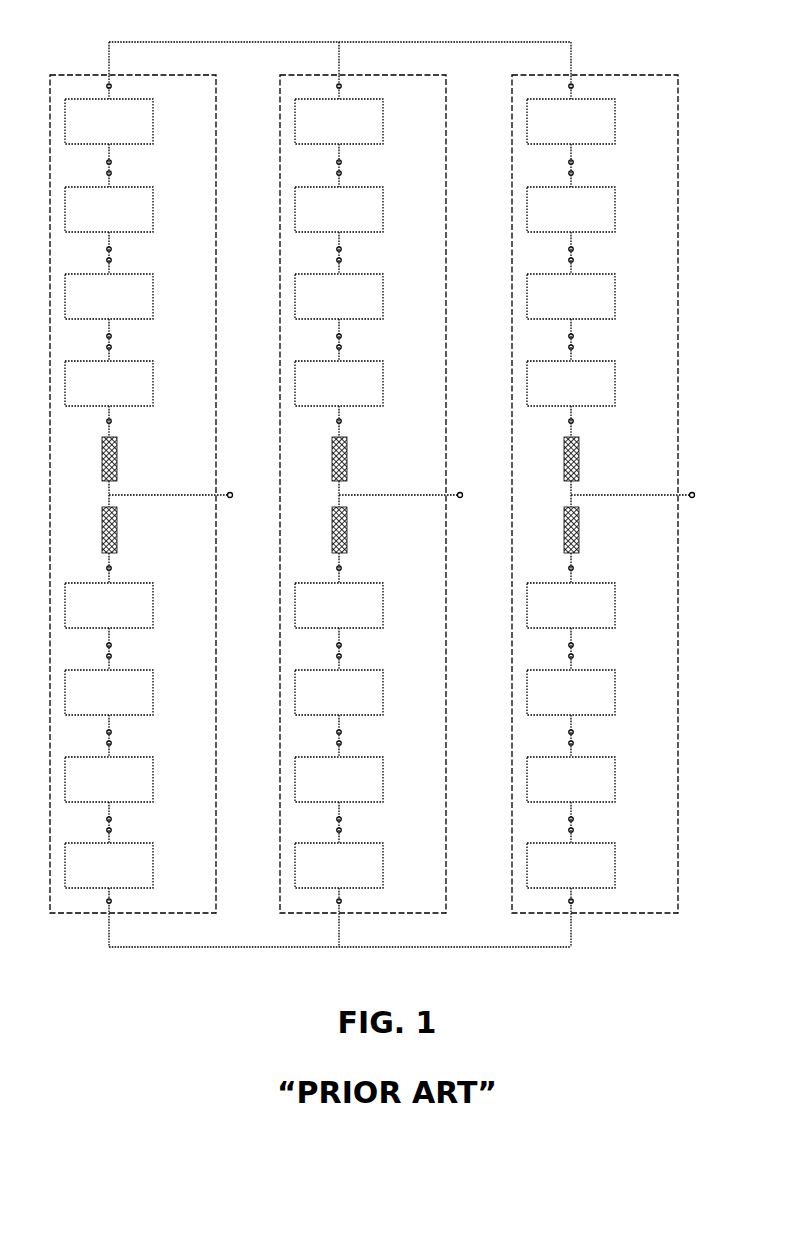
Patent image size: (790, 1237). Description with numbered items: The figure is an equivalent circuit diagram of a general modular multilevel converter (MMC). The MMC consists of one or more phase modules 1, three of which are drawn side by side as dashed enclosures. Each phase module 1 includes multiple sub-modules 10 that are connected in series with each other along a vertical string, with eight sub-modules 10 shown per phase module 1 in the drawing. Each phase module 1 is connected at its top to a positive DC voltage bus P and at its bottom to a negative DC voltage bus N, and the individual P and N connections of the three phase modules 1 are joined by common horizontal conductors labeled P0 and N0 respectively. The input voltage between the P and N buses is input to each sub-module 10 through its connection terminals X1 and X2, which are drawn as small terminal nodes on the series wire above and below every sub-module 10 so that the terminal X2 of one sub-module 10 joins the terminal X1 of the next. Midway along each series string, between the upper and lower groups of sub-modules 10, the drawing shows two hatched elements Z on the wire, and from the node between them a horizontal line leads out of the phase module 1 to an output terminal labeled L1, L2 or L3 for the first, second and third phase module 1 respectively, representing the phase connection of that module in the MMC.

The phase module 1 is at (382, 494).
The sub-module 10 is at (360, 493).
The connection terminal X1 is at (319, 537).
The connection terminal X2 is at (361, 451).
The impedance Z is at (356, 495).
The first output line L1 is at (180, 495).
The second output line L2 is at (410, 495).
The third output line L3 is at (642, 495).
The positive DC voltage bus P is at (340, 31).
The positive bus P0 is at (215, 42).
The negative DC voltage bus N is at (340, 961).
The negative bus N0 is at (218, 947).